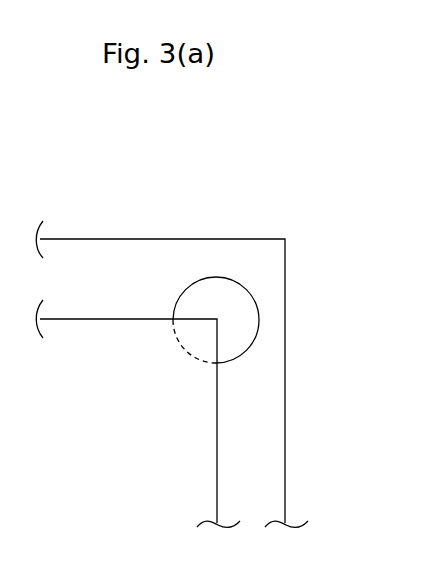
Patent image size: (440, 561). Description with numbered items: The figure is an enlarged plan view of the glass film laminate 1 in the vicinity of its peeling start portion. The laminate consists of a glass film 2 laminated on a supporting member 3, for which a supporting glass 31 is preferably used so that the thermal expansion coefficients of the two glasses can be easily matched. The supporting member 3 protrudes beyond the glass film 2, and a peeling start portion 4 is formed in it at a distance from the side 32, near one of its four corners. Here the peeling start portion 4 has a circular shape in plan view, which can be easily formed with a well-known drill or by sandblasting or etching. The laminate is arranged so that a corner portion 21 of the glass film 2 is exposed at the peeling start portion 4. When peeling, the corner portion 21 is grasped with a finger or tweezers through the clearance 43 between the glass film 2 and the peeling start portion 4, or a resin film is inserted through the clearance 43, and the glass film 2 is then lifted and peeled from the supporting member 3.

The glass film laminate 1 is at (280, 228).
The glass film 2 is at (202, 438).
The corner portion 21 is at (205, 338).
The supporting member 3 is at (165, 248).
The supporting glass 31 is at (172, 374).
The side 32 is at (86, 238).
The peeling start portion 4 is at (240, 302).
The clearance 43 is at (243, 330).